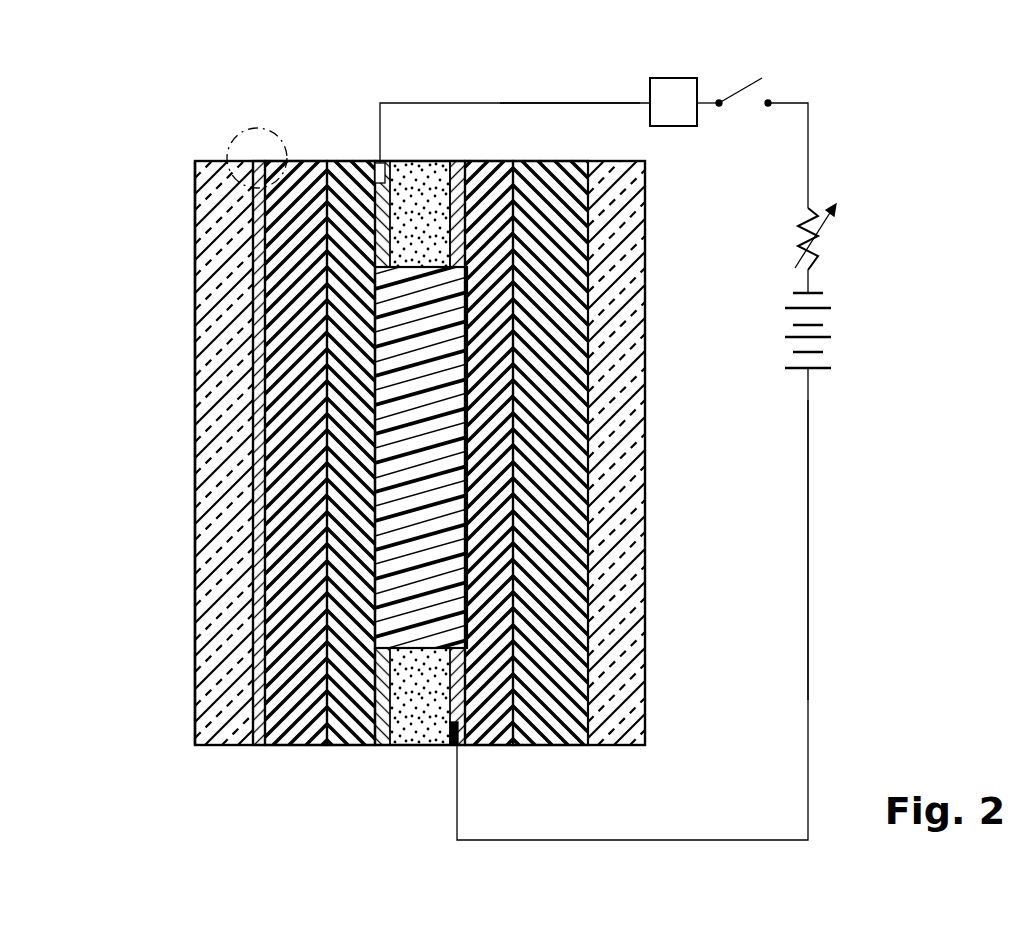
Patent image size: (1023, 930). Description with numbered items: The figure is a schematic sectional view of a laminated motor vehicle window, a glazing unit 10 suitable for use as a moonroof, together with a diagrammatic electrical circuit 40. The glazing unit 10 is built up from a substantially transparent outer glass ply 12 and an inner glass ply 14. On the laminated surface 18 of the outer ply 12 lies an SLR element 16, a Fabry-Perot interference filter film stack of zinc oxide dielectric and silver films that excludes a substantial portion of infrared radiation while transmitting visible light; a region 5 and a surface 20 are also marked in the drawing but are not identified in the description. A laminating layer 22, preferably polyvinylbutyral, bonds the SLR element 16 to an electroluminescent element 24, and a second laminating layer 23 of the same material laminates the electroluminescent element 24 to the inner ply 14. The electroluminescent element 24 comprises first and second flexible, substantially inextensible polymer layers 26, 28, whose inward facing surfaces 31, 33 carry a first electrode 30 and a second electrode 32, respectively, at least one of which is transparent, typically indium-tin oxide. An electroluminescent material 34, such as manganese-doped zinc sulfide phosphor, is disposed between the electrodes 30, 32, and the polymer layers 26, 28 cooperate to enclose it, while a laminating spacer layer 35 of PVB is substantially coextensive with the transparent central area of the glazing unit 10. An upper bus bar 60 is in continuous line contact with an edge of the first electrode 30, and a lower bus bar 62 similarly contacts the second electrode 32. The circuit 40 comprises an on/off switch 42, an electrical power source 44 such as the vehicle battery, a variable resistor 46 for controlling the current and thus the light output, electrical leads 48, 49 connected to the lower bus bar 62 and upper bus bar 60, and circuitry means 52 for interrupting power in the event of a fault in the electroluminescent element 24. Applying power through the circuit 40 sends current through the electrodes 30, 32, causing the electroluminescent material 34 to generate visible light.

The detail circle 5 is at (248, 145).
The glazing unit 10 is at (222, 145).
The outer glass ply 12 is at (212, 584).
The inner glass ply 14 is at (628, 443).
The SLR element 16 is at (256, 162).
The laminated surface 18 is at (262, 745).
The outer surface of first substrate 20 is at (195, 350).
The laminating layer 22 is at (302, 162).
The second laminating layer 23 is at (563, 744).
The electroluminescent element 24 is at (343, 75).
The first inextensible polymer layer 26 is at (326, 745).
The second inextensible polymer layer 28 is at (510, 738).
The first electrode 30 is at (390, 748).
The inward facing surface 31 is at (368, 745).
The second electrode 32 is at (445, 162).
The inward facing surface 33 is at (458, 162).
The electroluminescent material 34 is at (438, 162).
The laminating spacer layer 35 is at (412, 628).
The circuit 40 is at (618, 98).
The on/off switch 42 is at (770, 88).
The electrical power source 44 is at (838, 360).
The variable resistor 46 is at (823, 250).
The electrical lead 48 is at (810, 582).
The electrical lead 49 is at (568, 103).
The circuitry means 52 is at (677, 78).
The upper bus bar 60 is at (375, 162).
The lower bus bar 62 is at (462, 745).